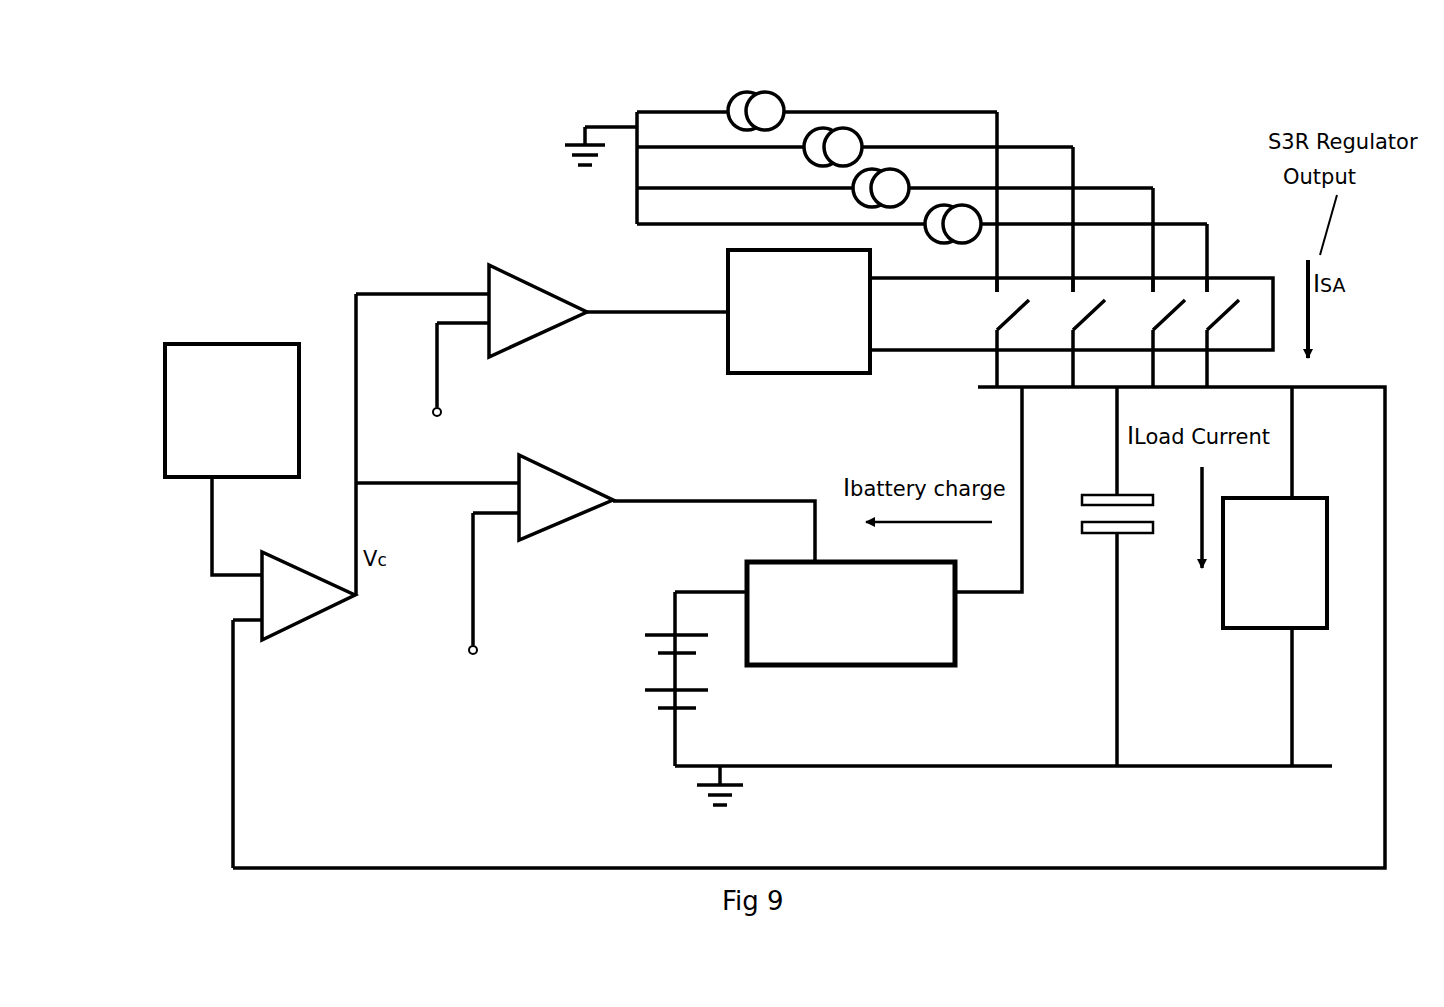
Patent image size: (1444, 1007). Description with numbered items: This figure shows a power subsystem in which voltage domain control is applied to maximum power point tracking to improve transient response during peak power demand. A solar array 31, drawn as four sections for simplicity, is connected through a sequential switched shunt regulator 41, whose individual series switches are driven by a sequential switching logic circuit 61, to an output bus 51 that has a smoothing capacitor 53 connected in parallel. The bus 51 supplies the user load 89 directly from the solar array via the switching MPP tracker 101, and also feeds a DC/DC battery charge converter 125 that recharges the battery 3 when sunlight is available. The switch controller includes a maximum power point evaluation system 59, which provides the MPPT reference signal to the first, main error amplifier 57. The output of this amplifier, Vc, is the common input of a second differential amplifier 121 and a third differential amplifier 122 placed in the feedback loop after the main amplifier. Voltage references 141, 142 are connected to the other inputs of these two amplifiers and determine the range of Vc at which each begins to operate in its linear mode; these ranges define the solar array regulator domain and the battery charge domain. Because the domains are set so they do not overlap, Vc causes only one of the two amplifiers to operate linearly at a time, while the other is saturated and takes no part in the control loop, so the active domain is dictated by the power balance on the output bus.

The battery 3 is at (645, 667).
The solar array 31 is at (705, 238).
The sequential switched shunt regulator 41 is at (1255, 290).
The bus 51 is at (1347, 372).
The smoothing capacitor 53 is at (1123, 553).
The error amplifier 57 is at (319, 597).
The maximum power point evaluation system 59 is at (252, 365).
The sequential switching logic circuit 61 is at (807, 348).
The user load 89 is at (1242, 585).
The switching MPP tracker 101 is at (1183, 118).
The second differential amplifier 121 is at (538, 307).
The third differential amplifier 122 is at (545, 515).
The DC/DC battery charge converter 125 is at (933, 620).
The voltage reference 141 is at (593, 430).
The voltage reference 142 is at (433, 722).